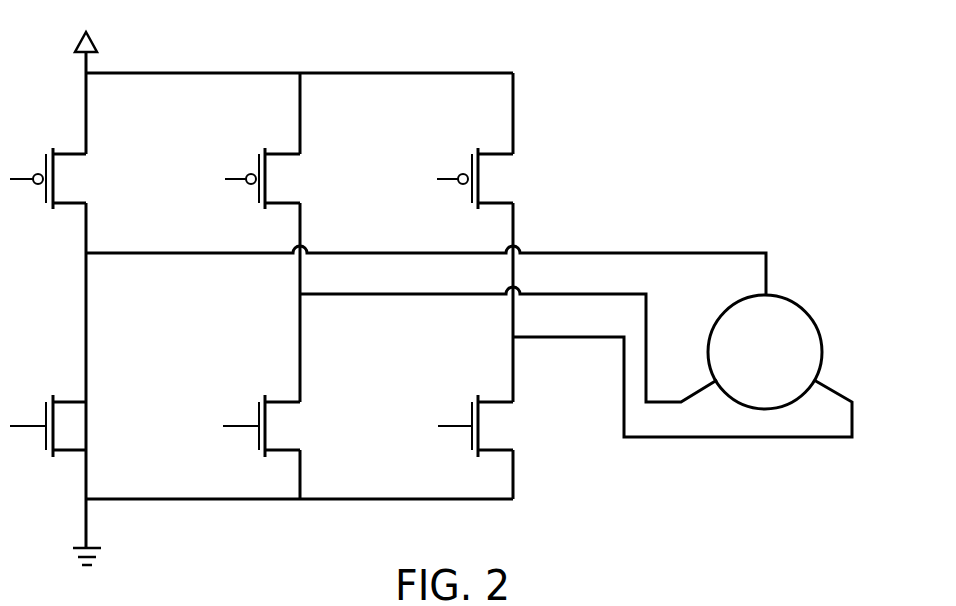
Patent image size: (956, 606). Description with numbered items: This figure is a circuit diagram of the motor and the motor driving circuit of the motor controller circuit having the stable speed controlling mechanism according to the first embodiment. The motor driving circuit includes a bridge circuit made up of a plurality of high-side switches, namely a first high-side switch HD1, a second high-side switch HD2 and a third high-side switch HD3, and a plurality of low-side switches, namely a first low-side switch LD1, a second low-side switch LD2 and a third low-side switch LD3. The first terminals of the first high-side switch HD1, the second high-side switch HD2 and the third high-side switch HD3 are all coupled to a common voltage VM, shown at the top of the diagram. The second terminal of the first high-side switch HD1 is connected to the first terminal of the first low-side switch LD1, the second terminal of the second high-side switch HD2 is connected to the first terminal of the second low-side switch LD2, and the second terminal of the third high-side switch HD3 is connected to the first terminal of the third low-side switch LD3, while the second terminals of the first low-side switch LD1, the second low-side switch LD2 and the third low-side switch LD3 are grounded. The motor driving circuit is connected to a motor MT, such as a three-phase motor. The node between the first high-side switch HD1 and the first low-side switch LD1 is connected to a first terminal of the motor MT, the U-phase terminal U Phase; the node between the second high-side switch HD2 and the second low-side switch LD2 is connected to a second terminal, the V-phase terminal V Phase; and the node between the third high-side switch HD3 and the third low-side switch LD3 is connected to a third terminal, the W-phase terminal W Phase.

The common voltage VM is at (289, 37).
The first high-side switch HD1 is at (48, 163).
The second high-side switch HD2 is at (262, 163).
The third high-side switch HD3 is at (475, 163).
The first low-side switch LD1 is at (48, 411).
The second low-side switch LD2 is at (261, 411).
The third low-side switch LD3 is at (475, 411).
The motor MT is at (805, 333).
The U-phase terminal U Phase is at (476, 270).
The V-phase terminal V Phase is at (522, 344).
The W-phase terminal W Phase is at (720, 387).